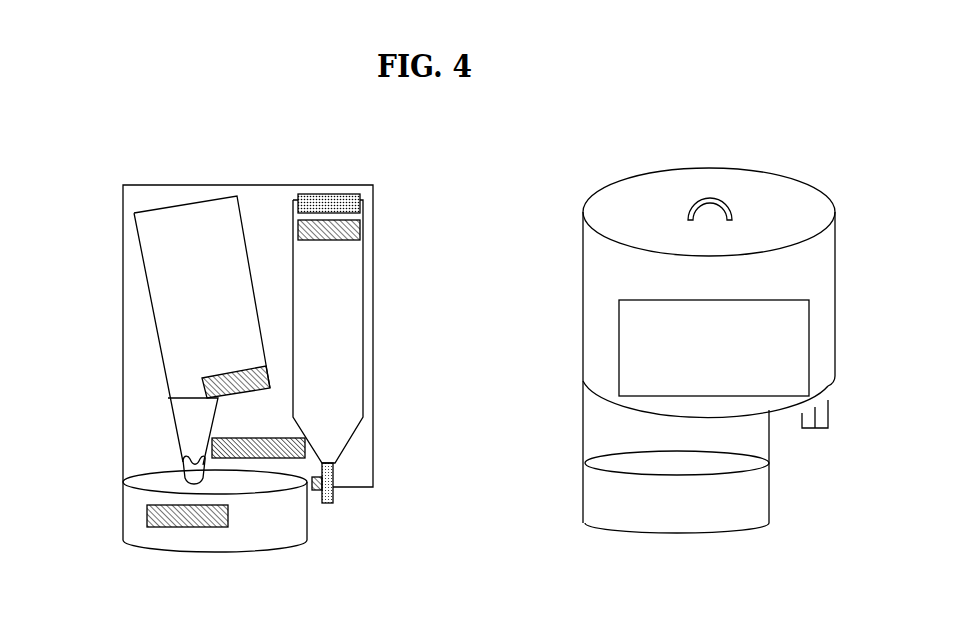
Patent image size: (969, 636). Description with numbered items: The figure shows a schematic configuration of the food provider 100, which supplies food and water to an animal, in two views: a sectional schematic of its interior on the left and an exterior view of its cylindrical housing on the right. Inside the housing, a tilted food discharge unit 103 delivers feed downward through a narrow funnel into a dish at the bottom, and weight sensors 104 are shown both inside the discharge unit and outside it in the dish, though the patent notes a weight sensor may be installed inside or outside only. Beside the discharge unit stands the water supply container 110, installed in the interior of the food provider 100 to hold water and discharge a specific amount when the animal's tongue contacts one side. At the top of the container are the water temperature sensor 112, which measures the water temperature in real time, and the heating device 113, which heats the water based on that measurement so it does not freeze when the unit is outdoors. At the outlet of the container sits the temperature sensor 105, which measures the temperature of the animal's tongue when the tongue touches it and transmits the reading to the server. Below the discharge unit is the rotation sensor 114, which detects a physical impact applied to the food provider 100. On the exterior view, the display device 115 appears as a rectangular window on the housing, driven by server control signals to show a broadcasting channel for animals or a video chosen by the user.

The food provider 100 is at (122, 351).
The food discharge unit 103 is at (147, 283).
The weight sensor 104 is at (201, 389).
The temperature sensor 105 is at (317, 503).
The water supply container 110 is at (366, 255).
The water temperature sensor 112 is at (295, 213).
The heating device 113 is at (350, 194).
The rotation sensor 114 is at (261, 460).
The display device 115 is at (619, 390).